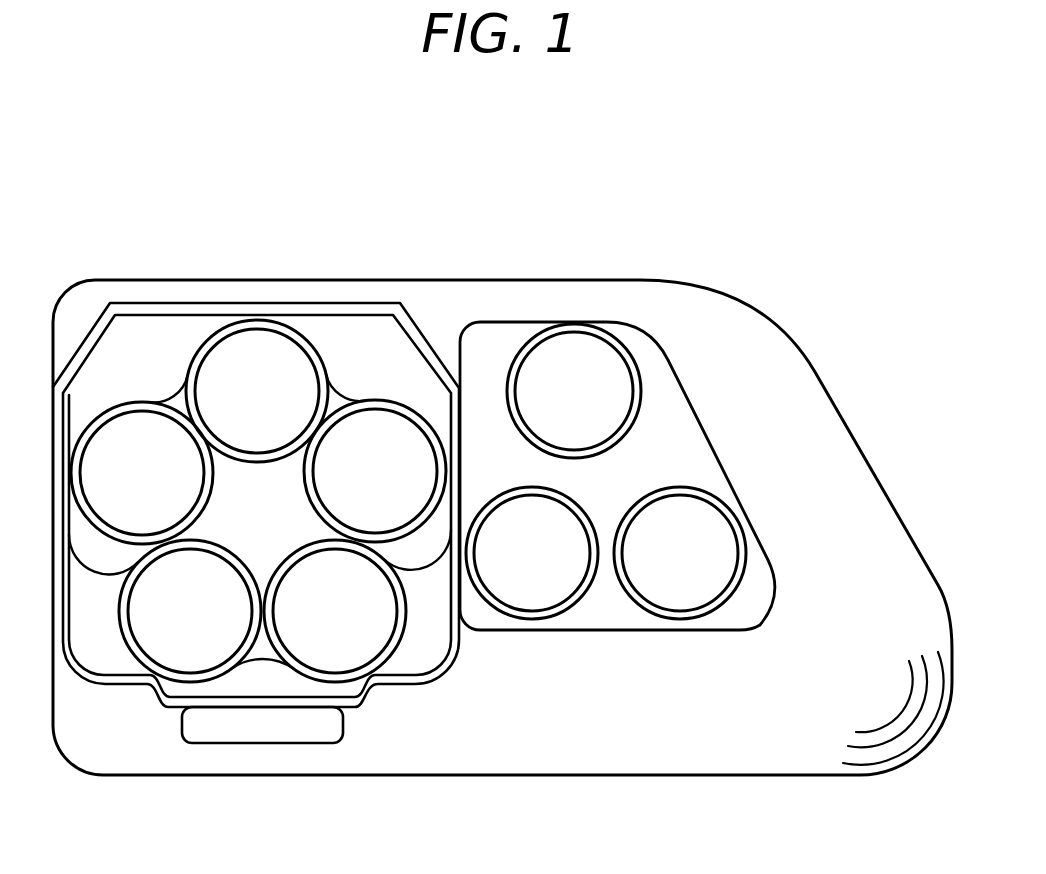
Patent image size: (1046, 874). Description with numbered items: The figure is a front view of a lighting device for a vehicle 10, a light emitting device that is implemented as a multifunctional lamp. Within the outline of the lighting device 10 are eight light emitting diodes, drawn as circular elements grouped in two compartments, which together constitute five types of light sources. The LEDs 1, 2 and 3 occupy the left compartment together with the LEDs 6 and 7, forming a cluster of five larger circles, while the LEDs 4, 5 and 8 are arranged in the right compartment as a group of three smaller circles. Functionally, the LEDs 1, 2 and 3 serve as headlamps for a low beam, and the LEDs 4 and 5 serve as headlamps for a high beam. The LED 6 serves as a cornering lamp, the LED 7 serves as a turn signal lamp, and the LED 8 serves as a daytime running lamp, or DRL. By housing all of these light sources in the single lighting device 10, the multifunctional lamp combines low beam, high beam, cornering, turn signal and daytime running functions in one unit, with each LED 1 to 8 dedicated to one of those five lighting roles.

The lighting device for a vehicle 10 is at (832, 275).
The LED 1 is at (142, 440).
The LED 2 is at (258, 360).
The LED 3 is at (375, 442).
The LED 4 is at (573, 370).
The LED 5 is at (683, 585).
The LED 6 is at (187, 633).
The LED 7 is at (338, 632).
The LED 8 is at (532, 585).